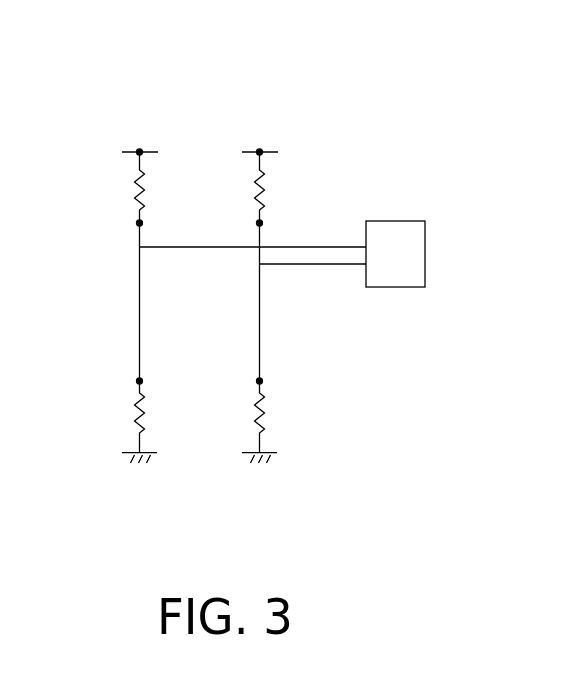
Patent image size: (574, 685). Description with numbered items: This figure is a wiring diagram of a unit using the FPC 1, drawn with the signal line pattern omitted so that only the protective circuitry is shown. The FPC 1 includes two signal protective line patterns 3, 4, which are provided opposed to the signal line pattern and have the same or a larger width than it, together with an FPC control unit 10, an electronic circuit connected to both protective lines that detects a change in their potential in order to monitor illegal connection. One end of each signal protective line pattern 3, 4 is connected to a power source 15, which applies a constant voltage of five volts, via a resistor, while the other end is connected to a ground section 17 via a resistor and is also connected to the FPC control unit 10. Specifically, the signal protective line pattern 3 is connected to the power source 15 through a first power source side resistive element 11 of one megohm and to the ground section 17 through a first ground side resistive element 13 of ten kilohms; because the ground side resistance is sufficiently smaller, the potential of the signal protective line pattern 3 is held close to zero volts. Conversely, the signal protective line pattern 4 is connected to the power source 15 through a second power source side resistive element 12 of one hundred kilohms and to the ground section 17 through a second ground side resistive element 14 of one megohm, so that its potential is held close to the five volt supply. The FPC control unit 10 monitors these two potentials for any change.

The FPC 1 is at (195, 33).
The signal protective line pattern 3 is at (140, 368).
The signal protective line pattern 4 is at (260, 368).
The FPC control unit 10 is at (395, 254).
The first power source side resistive element 11 is at (145, 187).
The second power source side resistive element 12 is at (278, 187).
The first ground side resistive element 13 is at (149, 417).
The second ground side resistive element 14 is at (271, 417).
The power source 15 is at (138, 136).
The ground section 17 is at (137, 470).